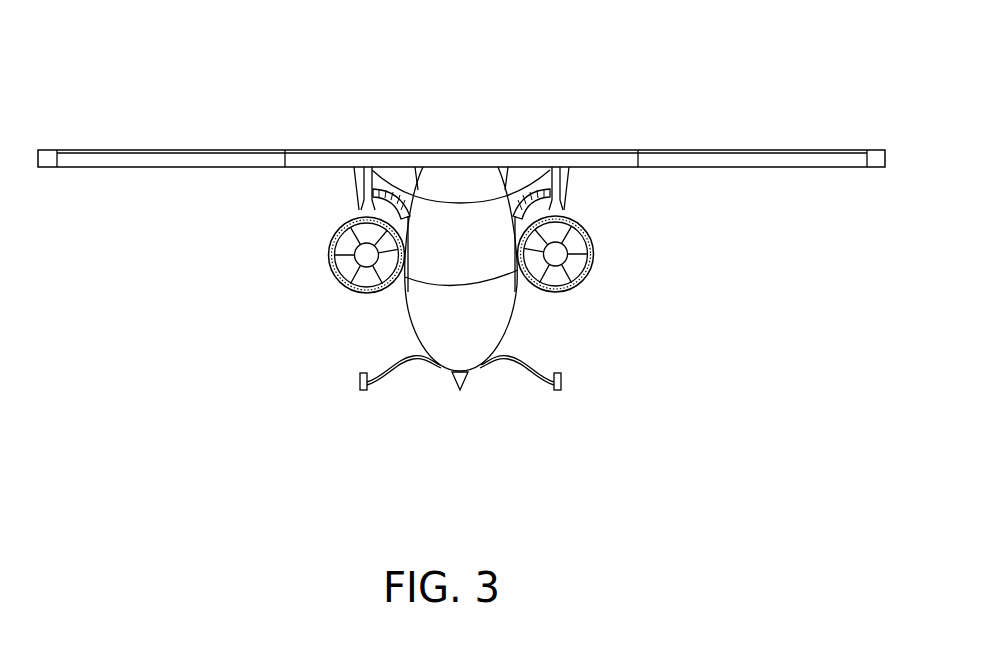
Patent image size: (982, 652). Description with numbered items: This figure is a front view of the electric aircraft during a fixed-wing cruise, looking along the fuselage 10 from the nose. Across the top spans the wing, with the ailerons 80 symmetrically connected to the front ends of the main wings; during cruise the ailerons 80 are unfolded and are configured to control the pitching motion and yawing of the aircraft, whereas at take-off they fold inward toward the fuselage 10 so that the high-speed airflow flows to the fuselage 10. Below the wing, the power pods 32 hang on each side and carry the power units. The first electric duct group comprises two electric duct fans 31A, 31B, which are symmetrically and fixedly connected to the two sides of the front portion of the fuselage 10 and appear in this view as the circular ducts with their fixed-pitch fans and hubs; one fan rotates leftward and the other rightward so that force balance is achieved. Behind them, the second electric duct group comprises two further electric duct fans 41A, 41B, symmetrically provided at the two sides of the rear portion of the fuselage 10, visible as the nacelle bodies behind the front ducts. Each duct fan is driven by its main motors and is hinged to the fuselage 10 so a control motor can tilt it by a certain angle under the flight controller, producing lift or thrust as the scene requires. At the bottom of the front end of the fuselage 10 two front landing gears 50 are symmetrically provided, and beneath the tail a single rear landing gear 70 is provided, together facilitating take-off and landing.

The fuselage 10 is at (481, 190).
The ailerons 80 is at (270, 156).
The power pods 32 is at (352, 173).
The electric duct fan 41A is at (380, 212).
The electric duct fan 41B is at (543, 212).
The electric duct fan 31A is at (361, 287).
The electric duct fan 31B is at (562, 287).
The front landing gears 50 is at (363, 394).
The rear landing gear 70 is at (457, 396).